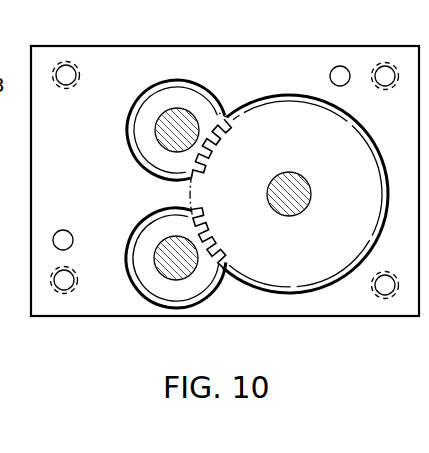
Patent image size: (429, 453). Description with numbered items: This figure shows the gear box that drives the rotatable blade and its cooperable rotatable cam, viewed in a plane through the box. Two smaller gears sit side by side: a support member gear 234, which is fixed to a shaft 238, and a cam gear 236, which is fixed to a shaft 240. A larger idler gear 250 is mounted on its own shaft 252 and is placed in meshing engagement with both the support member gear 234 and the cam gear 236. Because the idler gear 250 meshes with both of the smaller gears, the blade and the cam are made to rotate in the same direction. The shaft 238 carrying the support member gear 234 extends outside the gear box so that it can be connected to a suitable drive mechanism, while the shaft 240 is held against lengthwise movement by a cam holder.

The support member gear 234 is at (163, 283).
The cam gear 236 is at (188, 90).
The shaft 238 is at (184, 268).
The shaft 240 is at (165, 126).
The idler gear 250 is at (275, 115).
The shaft 252 is at (300, 207).